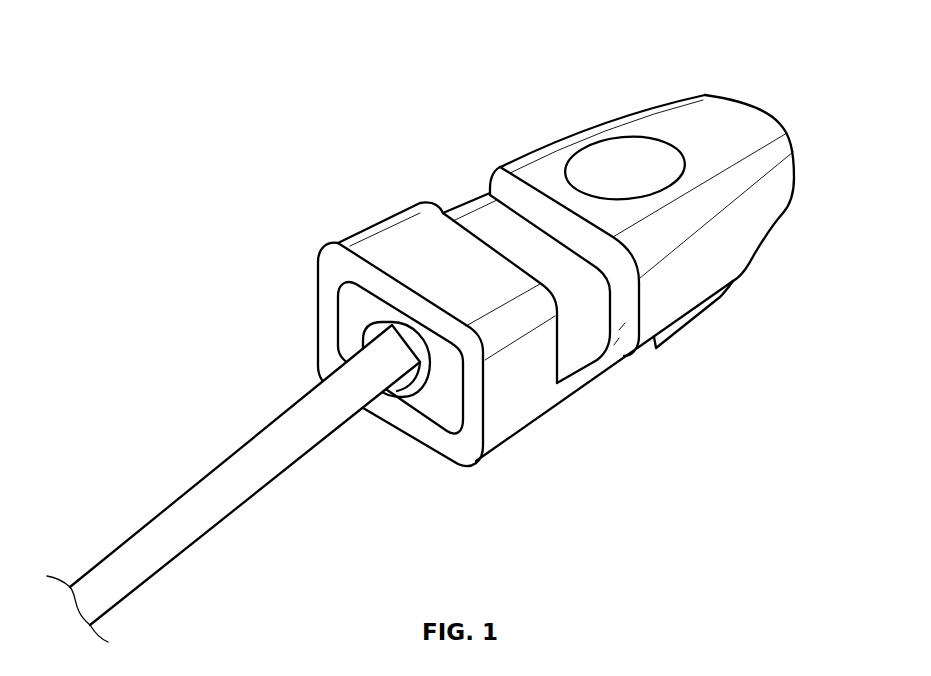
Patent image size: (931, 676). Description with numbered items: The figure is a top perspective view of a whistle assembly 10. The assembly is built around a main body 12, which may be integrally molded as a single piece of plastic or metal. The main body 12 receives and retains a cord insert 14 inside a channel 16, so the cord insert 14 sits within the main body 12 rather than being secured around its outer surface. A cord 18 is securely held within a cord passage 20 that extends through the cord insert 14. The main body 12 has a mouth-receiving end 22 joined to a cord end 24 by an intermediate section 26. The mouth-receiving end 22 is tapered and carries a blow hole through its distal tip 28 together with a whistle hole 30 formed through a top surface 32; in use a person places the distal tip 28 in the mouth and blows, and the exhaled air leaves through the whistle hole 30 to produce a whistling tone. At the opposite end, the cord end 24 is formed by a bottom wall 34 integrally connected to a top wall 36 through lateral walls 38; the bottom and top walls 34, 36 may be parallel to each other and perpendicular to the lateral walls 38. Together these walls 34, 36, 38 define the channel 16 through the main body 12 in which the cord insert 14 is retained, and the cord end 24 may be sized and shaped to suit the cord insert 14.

The whistle assembly 10 is at (162, 72).
The main body 12 is at (633, 110).
The cord insert 14 is at (350, 338).
The channel 16 is at (338, 313).
The cord 18 is at (173, 540).
The cord passage 20 is at (395, 384).
The mouth-receiving end 22 is at (763, 238).
The cord end 24 is at (473, 418).
The intermediate section 26 is at (463, 203).
The distal tip 28 is at (775, 122).
The whistle hole 30 is at (596, 150).
The top surface 32 is at (683, 115).
The bottom wall 34 is at (437, 468).
The top wall 36 is at (393, 245).
The lateral walls 38 is at (318, 290).